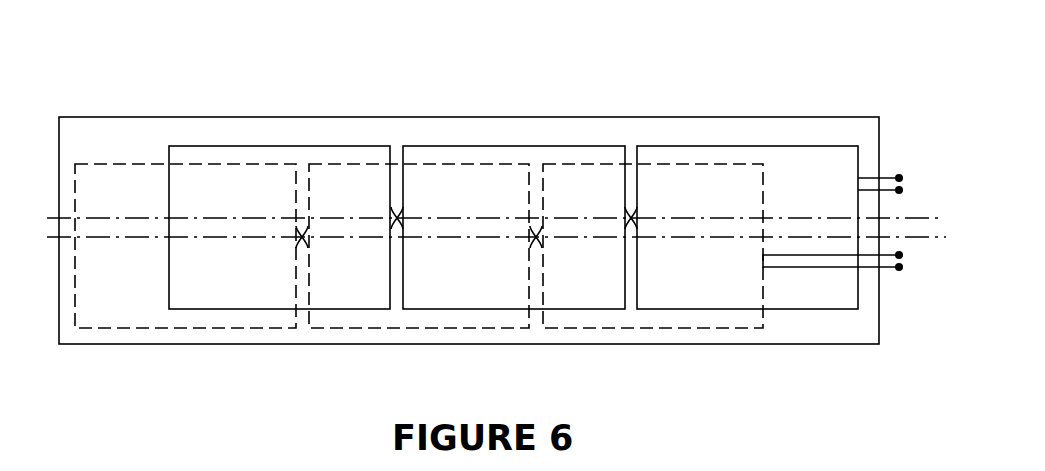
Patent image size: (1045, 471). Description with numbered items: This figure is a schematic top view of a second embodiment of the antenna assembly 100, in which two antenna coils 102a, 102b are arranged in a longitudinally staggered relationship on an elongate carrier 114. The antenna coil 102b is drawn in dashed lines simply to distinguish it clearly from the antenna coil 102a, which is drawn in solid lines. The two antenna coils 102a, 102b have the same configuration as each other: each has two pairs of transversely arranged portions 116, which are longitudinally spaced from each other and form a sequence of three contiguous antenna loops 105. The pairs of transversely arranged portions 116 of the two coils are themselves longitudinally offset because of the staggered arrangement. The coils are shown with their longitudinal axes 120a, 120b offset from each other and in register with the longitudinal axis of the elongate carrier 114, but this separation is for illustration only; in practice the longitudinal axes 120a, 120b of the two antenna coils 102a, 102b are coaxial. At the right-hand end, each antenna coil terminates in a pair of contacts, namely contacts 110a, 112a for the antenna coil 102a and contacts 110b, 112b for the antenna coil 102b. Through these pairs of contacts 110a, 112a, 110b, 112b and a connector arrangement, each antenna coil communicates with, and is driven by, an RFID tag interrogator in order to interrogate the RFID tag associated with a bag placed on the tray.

The antenna assembly 100 is at (496, 228).
The antenna coil 102a is at (243, 147).
The antenna coil 102b is at (117, 164).
The antenna loop 105 is at (150, 280).
The contact 110a is at (899, 178).
The contact 110b is at (899, 255).
The contact 112a is at (899, 191).
The contact 112b is at (899, 267).
The elongate carrier 114 is at (340, 117).
The transversely arranged portions 116 is at (530, 235).
The longitudinal axis 120a is at (387, 218).
The longitudinal axis 120b is at (362, 240).